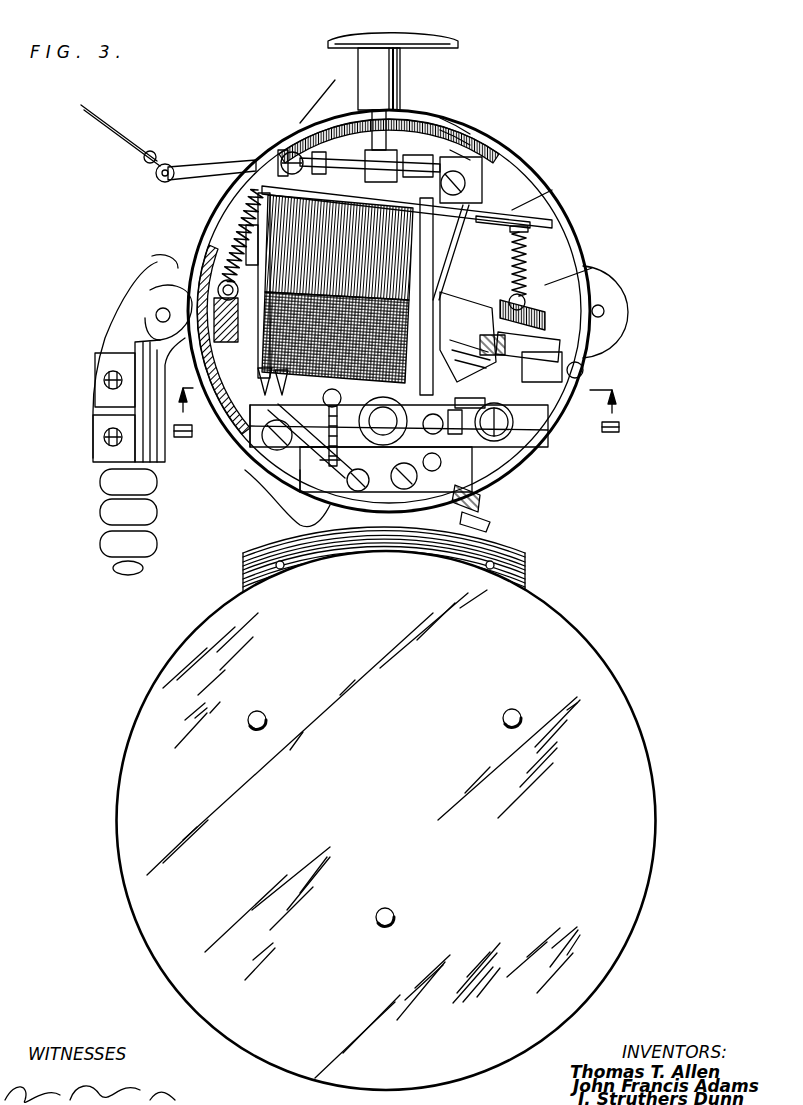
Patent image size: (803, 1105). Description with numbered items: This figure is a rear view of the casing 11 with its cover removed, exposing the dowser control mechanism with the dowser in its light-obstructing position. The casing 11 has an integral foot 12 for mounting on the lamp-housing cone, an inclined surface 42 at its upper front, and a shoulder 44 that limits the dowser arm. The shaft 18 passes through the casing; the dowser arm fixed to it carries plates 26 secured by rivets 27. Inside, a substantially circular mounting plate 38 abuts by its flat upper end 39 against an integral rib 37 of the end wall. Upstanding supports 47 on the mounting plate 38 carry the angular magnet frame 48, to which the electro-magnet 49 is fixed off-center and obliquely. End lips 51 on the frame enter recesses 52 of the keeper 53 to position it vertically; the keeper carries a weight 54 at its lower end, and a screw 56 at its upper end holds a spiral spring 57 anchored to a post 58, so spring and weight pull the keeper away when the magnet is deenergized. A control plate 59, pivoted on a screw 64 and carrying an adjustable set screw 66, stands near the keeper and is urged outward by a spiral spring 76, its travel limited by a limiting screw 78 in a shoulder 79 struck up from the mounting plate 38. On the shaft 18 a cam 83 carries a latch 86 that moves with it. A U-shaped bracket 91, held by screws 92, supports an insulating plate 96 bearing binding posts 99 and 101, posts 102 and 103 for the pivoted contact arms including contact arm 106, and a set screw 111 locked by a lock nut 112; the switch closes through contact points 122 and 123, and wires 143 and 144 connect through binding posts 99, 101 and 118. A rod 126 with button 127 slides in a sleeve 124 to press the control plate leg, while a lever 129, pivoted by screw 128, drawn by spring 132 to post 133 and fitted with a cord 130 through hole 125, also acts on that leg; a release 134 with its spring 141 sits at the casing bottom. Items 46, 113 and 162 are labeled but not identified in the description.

The casing 11 is at (565, 212).
The foot 12 is at (528, 561).
The shaft 18 is at (383, 421).
The plate 26 is at (613, 698).
The rivets or other fastening means 27 is at (524, 312).
The rib 37 is at (449, 124).
The mounting plate 38 is at (564, 231).
The flat upper end 39 is at (462, 145).
The inclined surface 42 is at (452, 110).
The shoulder 44 is at (360, 66).
The disc face 46 is at (363, 834).
The upstanding supports 47 is at (262, 381).
The angular magnet frame 48 is at (272, 276).
The electro-magnet 49 is at (286, 155).
The end lips 51 is at (436, 204).
The recesses 52 is at (451, 252).
The keeper 53 is at (434, 262).
The weight 54 is at (468, 336).
The screw 56 is at (414, 158).
The spiral spring 57 is at (371, 156).
The post 58 is at (318, 152).
The control plate 59 is at (480, 228).
The screw 64 is at (470, 178).
The set screw 66 is at (498, 340).
The spiral spring 76 is at (528, 248).
The limiting screw 78 is at (532, 378).
The shoulder 79 is at (518, 360).
The cam 83 is at (342, 397).
The latch 86 is at (458, 393).
The U-shaped bracket 91 is at (526, 412).
The screws 92 is at (521, 428).
The insulating plate 96 is at (258, 422).
The binding post 99 is at (316, 442).
The binding post 101 is at (500, 434).
The post 102 is at (434, 420).
The post 103 is at (472, 478).
The contact arm 106 is at (287, 498).
The set screw 111 is at (338, 400).
The lock nut 112 is at (338, 452).
The screw 113 is at (353, 495).
The binding post 118 is at (400, 492).
The contact point 122 is at (300, 418).
The contact point 123 is at (308, 456).
The sleeve 124 is at (400, 72).
The hole 125 is at (168, 182).
The rod 126 is at (400, 118).
The button 127 is at (420, 42).
The screw 128 is at (282, 150).
The lever 129 is at (201, 165).
The wire or cord 130 is at (120, 124).
The spring 132 is at (238, 228).
The post 133 is at (220, 283).
The release 134 is at (482, 507).
The spring 141 is at (490, 524).
The wire 143 is at (235, 324).
The wire 144 is at (302, 432).
The cable arm 162 is at (112, 333).